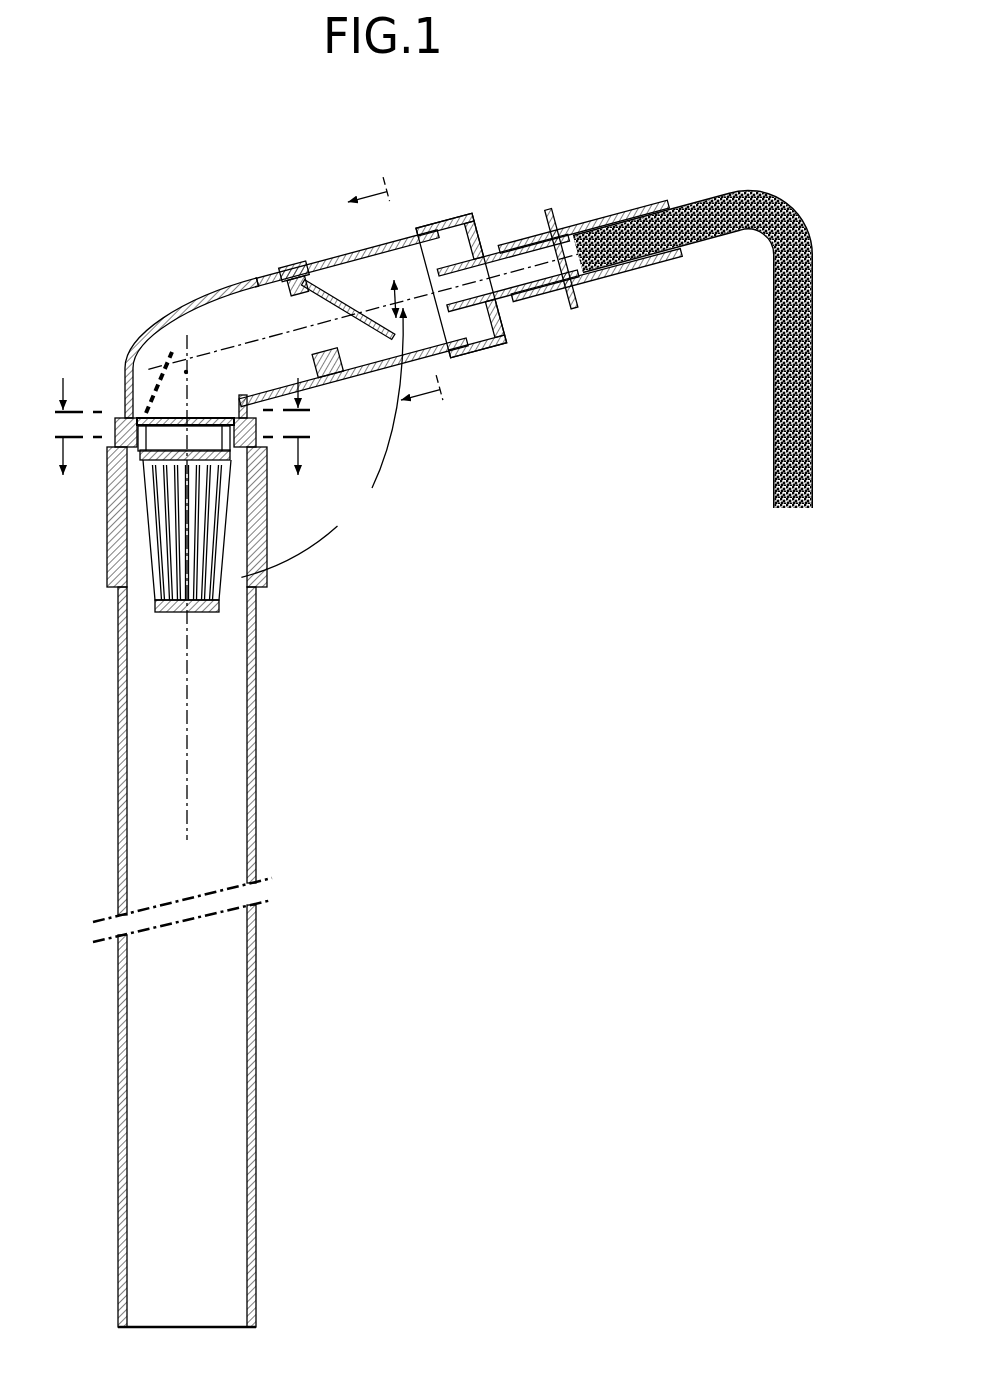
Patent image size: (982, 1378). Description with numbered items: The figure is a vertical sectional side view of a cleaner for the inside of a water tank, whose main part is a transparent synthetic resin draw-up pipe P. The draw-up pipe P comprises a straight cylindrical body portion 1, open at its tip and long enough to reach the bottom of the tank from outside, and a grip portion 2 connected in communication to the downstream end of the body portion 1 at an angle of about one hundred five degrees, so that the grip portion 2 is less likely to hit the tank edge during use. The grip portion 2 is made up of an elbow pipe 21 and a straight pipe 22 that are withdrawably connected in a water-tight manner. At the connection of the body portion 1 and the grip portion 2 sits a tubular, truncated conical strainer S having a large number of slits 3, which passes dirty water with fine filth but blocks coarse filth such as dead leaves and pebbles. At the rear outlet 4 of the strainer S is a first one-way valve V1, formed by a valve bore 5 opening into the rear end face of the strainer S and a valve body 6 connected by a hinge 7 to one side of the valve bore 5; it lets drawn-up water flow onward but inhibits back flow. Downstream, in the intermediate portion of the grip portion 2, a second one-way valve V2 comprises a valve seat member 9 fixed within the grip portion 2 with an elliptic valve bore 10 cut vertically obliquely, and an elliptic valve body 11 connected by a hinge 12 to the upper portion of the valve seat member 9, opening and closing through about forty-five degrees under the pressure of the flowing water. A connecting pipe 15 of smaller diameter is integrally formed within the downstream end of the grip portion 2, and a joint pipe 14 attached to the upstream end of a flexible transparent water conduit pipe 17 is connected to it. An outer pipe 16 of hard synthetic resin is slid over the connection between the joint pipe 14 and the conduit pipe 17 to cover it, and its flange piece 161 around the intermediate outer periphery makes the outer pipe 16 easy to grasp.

The body portion 1 is at (262, 653).
The grip portion 2 is at (272, 150).
The elbow pipe 21 is at (228, 283).
The straight pipe 22 is at (262, 280).
The slits 3 is at (166, 612).
The outlet 4 is at (185, 370).
The valve bore 5 is at (149, 415).
The valve body 6 is at (209, 408).
The hinge 7 is at (140, 416).
The valve seat member 9 is at (290, 292).
The valve bore 10 is at (372, 297).
The valve body 11 is at (385, 287).
The hinge 12 is at (313, 263).
The joint pipe 14 is at (488, 253).
The connecting pipe 15 is at (482, 340).
The outer pipe 16 is at (613, 267).
The flange piece 161 is at (553, 218).
The water conduit pipe 17 is at (682, 203).
The strainer S is at (147, 548).
The first one-way valve V1 is at (151, 383).
The second one-way valve V2 is at (453, 233).
The draw-up pipe P is at (547, 632).